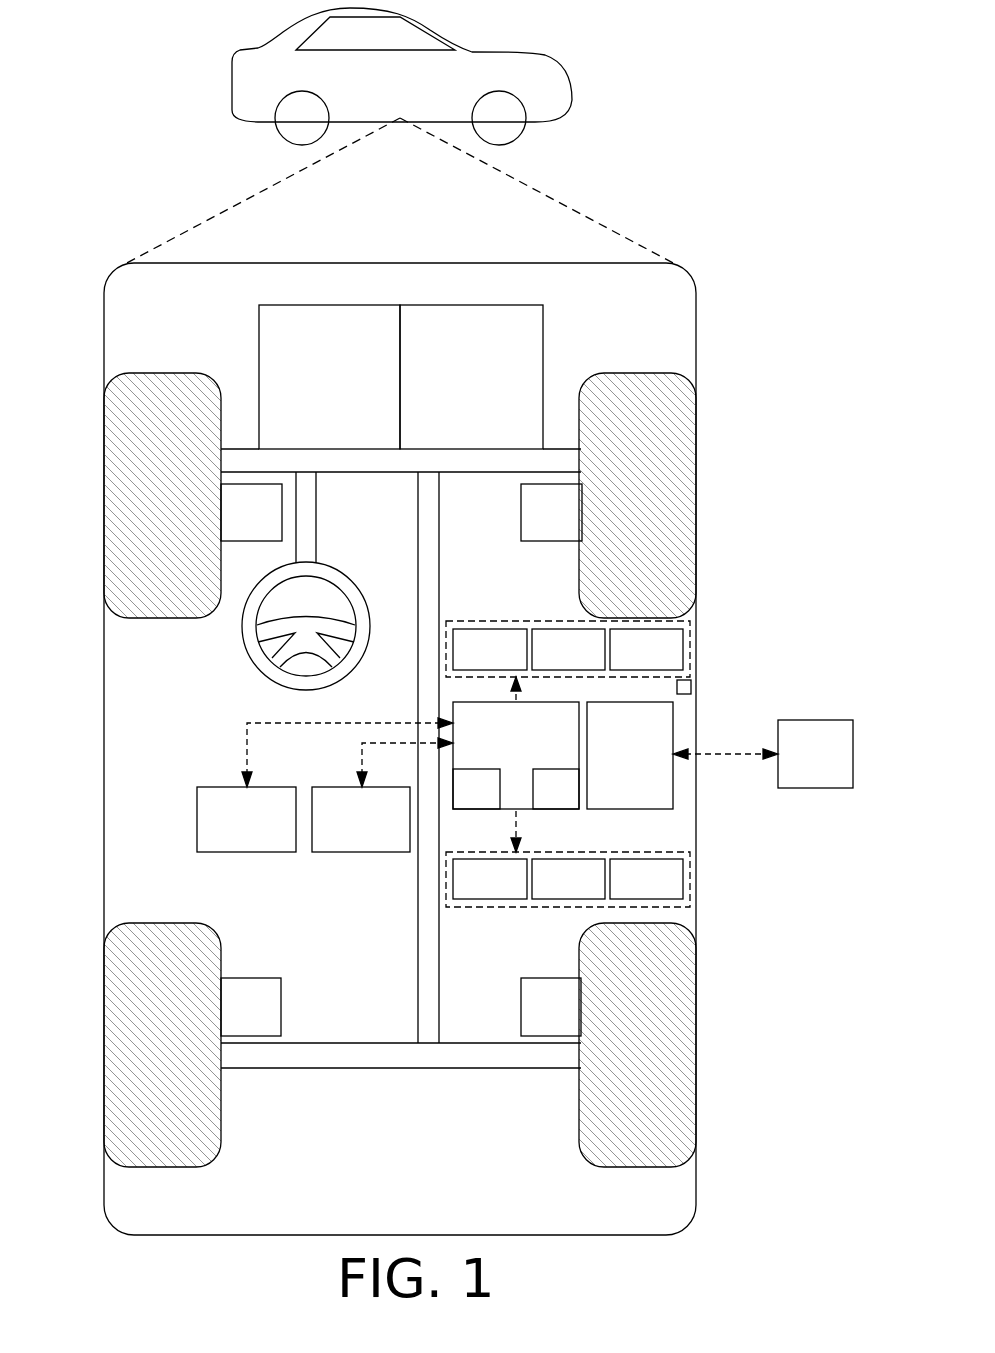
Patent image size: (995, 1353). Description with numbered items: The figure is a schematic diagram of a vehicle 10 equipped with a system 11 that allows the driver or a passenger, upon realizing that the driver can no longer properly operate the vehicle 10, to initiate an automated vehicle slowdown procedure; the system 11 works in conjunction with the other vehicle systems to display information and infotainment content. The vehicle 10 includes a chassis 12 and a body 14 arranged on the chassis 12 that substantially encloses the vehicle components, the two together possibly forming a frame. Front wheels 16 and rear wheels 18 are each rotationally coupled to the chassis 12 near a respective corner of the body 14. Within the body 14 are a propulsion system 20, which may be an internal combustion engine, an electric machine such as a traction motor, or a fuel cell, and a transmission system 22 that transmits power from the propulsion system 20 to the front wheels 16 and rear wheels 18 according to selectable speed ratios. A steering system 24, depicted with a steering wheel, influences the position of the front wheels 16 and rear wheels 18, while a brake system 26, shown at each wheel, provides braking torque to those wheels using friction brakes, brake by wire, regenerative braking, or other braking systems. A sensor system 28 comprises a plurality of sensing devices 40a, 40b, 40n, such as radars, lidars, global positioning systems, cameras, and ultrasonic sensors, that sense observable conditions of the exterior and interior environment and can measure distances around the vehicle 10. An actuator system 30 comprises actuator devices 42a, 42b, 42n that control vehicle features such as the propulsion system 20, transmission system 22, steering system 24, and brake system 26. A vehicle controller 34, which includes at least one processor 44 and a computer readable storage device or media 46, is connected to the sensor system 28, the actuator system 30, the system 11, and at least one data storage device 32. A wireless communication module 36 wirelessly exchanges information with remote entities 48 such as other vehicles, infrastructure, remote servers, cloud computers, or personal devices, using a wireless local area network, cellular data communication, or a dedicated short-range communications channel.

The vehicle 10 is at (386, 94).
The system 11 is at (232, 831).
The chassis 12 is at (418, 950).
The body 14 is at (104, 748).
The front wheels 16 is at (163, 373).
The rear wheels 18 is at (163, 1167).
The propulsion system 20 is at (315, 390).
The transmission system 22 is at (457, 390).
The steering system 24 is at (328, 507).
The brake system 26 is at (237, 525).
The sensor system 28 is at (536, 621).
The actuator system 30 is at (544, 907).
The data storage device 32 is at (347, 831).
The vehicle controller 34 is at (502, 750).
The wireless communication module 36 is at (616, 767).
The sensing device 40a is at (470, 662).
The sensing device 40b is at (548, 662).
The sensing device 40n is at (626, 662).
The actuator device 42a is at (470, 892).
The actuator device 42b is at (548, 892).
The actuator device 42n is at (626, 892).
The processor 44 is at (463, 801).
The computer readable storage device or media 46 is at (542, 801).
The remote entities 48 is at (801, 767).